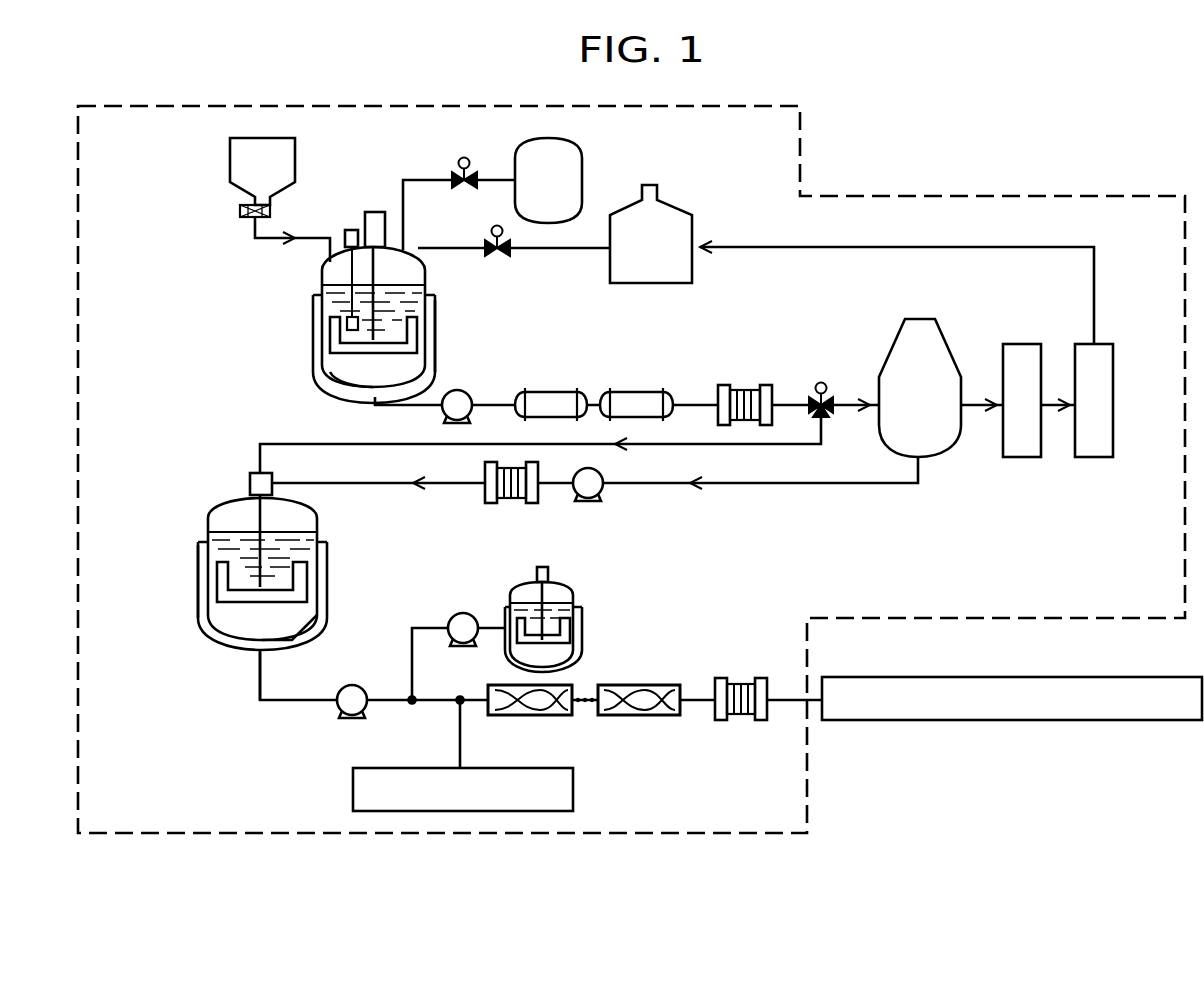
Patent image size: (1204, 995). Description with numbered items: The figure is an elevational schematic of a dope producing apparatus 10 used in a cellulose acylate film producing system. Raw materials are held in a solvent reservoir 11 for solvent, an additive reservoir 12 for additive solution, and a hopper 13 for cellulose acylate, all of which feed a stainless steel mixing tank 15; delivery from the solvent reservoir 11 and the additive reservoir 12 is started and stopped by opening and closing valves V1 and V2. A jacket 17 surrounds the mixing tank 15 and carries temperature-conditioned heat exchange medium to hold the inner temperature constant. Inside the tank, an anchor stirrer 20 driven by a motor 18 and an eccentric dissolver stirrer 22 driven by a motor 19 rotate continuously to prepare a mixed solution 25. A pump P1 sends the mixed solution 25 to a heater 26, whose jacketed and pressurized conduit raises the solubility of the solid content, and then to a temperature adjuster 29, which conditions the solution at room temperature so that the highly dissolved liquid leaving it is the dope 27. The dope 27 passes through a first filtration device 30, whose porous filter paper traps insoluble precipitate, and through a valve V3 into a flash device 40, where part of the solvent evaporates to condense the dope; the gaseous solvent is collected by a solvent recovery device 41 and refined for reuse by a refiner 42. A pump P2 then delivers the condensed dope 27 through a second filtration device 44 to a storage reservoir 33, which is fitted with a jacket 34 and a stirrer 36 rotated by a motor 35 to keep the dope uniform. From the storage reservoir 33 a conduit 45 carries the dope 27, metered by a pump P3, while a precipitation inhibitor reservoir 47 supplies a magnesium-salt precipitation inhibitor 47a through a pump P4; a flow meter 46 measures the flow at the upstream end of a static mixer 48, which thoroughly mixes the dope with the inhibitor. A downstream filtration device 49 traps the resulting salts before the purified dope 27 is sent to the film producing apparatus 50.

The dope producing apparatus 10 is at (916, 196).
The solvent reservoir 11 is at (662, 196).
The additive reservoir 12 is at (565, 155).
The hopper 13 is at (230, 160).
The mixing tank 15 is at (318, 299).
The jacket 17 is at (437, 312).
The motor 18 is at (375, 212).
The motor 19 is at (350, 230).
The anchor stirrer 20 is at (332, 346).
The dissolver stirrer 22 is at (346, 323).
The mixed solution 25 is at (352, 375).
The heater 26 is at (555, 392).
The temperature adjuster 29 is at (640, 392).
The first filtration device 30 is at (745, 385).
The storage reservoir 33 is at (198, 512).
The jacket 34 is at (198, 546).
The motor 35 is at (250, 483).
The stirrer 36 is at (217, 581).
The dope 27 is at (237, 613).
The flash device 40 is at (919, 322).
The solvent recovery device 41 is at (1024, 458).
The refiner 42 is at (1094, 458).
The second filtration device 44 is at (514, 504).
The conduit 45 is at (262, 673).
The flow meter 46 is at (575, 790).
The precipitation inhibitor reservoir 47 is at (580, 603).
The precipitation inhibitor 47a is at (552, 650).
The static mixer 48 is at (638, 716).
The filtration device 49 is at (743, 721).
The cellulose acylate film producing apparatus 50 is at (1008, 722).
The pump P1 is at (457, 390).
The pump P2 is at (588, 502).
The pump P3 is at (352, 718).
The pump P4 is at (463, 613).
The valve V1 is at (499, 256).
The valve V2 is at (465, 188).
The valve V3 is at (821, 382).